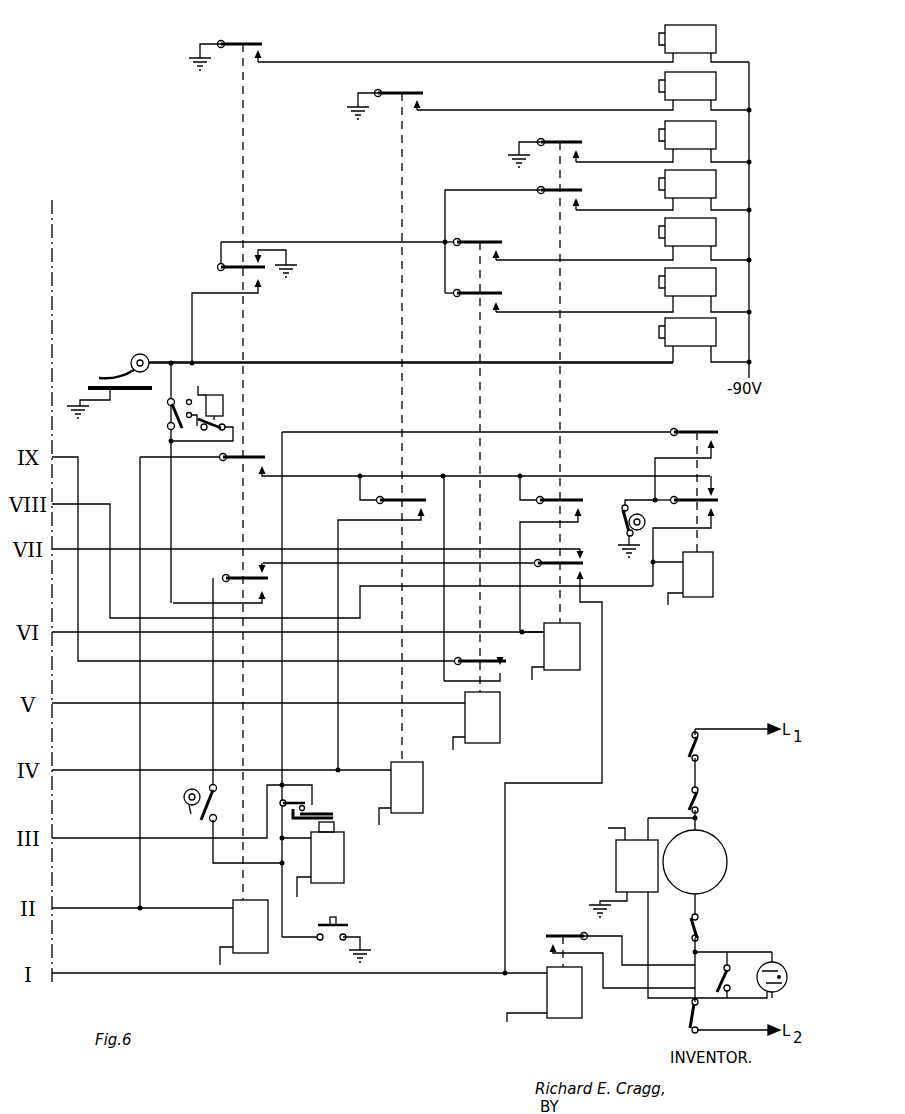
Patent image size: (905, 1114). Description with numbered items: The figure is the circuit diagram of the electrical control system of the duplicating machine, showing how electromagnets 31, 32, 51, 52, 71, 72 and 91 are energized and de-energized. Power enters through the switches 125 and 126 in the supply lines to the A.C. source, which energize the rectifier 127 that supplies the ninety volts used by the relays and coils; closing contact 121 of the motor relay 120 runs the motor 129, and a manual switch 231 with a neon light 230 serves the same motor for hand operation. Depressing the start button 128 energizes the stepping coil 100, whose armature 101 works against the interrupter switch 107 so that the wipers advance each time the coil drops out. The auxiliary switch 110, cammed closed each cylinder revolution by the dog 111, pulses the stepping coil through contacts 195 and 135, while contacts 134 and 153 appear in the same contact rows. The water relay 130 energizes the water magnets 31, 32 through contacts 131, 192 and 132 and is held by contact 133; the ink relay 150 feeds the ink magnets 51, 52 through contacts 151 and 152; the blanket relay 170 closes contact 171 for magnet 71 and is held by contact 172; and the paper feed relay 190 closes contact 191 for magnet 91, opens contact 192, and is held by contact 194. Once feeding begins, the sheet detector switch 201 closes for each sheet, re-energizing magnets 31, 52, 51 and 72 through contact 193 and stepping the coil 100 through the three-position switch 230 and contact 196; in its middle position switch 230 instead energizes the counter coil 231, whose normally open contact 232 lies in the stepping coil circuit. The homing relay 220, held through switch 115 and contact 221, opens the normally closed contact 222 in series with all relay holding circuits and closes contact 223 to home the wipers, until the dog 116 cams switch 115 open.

The paper feed magnet 91 is at (718, 48).
The blanket magnet 71 is at (712, 97).
The water magnet 32 is at (712, 145).
The water magnet 31 is at (712, 195).
The ink magnet 52 is at (712, 245).
The ink magnet 51 is at (712, 293).
The blanket roll magnet 72 is at (712, 345).
The paper feed relay contact 191 is at (264, 54).
The blanket relay contact 171 is at (425, 104).
The water relay contact 132 is at (583, 155).
The water relay contact 131 is at (583, 203).
The ink relay contact 152 is at (503, 256).
The ink relay contact 151 is at (503, 308).
The paper feed relay contact 192 is at (255, 261).
The paper feed relay contact 193 is at (266, 285).
The sheet detector switch 201 is at (370, 379).
The three-position switch 230 is at (166, 420).
The counter coil 231 is at (224, 401).
The counter contact 232 is at (213, 432).
The paper feed relay holding contact 194 is at (268, 473).
The blanket relay holding contact 172 is at (428, 515).
The homing relay contact 223 is at (718, 448).
The homing relay contact 222 is at (719, 484).
The homing relay holding contact 221 is at (719, 512).
The homing relay 220 is at (713, 590).
The water relay holding contact 133 is at (585, 510).
The dog 116 is at (637, 512).
The switch 115 is at (620, 525).
The switch contact 134 is at (583, 567).
The contact 135 is at (585, 580).
The paper feed relay contact 195 is at (270, 578).
The paper feed relay contact 196 is at (270, 600).
The switch 153 is at (503, 668).
The water relay 130 is at (580, 661).
The ink relay 150 is at (500, 735).
The auxiliary switch 110 is at (208, 785).
The dog 111 is at (187, 810).
The interrupter switch 107 is at (298, 800).
The armature 101 is at (327, 812).
The stepping coil 100 is at (344, 872).
The blanket relay 170 is at (423, 800).
The start button 128 is at (350, 926).
The paper feed relay 190 is at (268, 947).
The motor relay contact 121 is at (551, 946).
The motor relay 120 is at (582, 1012).
The rectifier 127 is at (616, 882).
The motor 129 is at (727, 875).
The line switch 125 is at (700, 752).
The line switch 126 is at (700, 798).